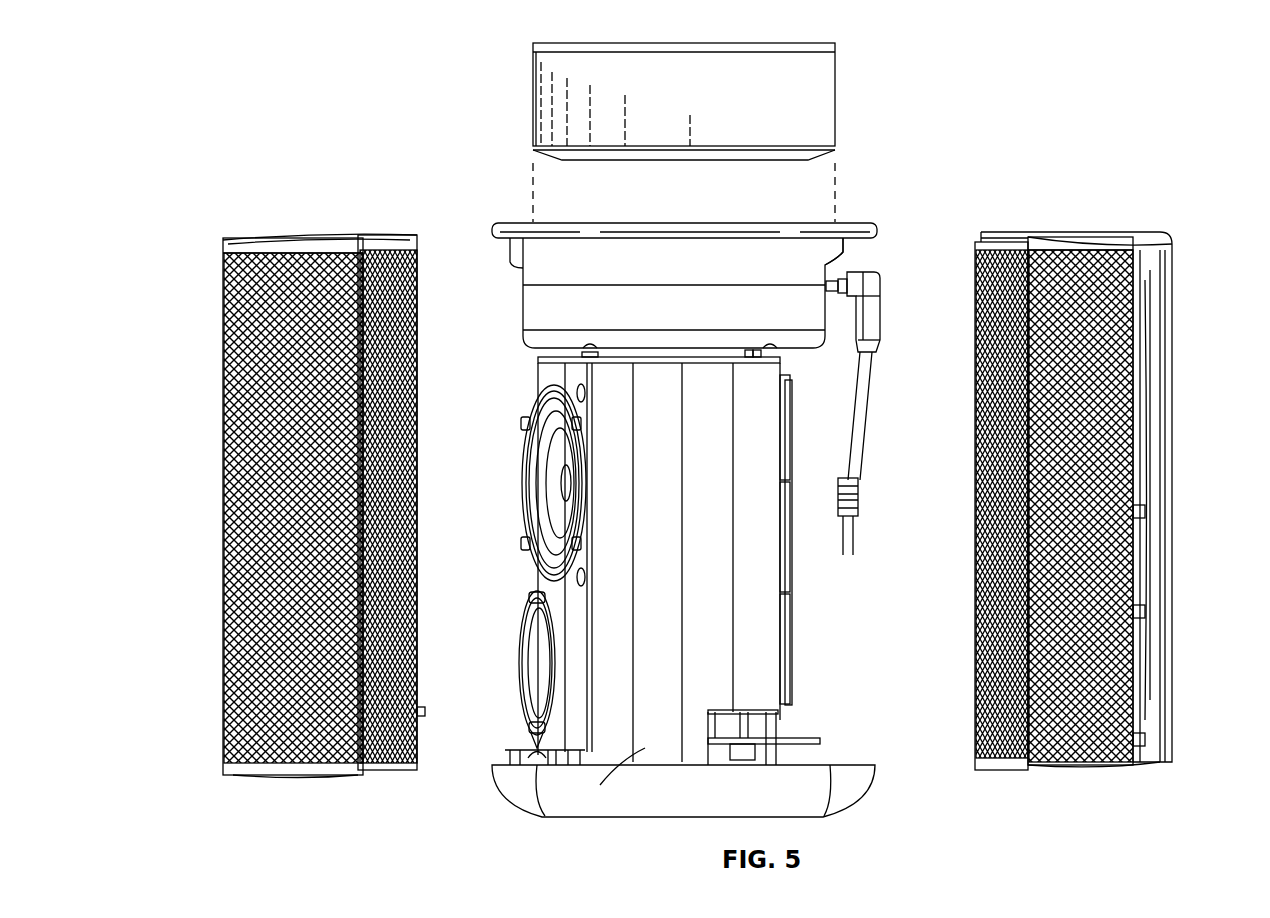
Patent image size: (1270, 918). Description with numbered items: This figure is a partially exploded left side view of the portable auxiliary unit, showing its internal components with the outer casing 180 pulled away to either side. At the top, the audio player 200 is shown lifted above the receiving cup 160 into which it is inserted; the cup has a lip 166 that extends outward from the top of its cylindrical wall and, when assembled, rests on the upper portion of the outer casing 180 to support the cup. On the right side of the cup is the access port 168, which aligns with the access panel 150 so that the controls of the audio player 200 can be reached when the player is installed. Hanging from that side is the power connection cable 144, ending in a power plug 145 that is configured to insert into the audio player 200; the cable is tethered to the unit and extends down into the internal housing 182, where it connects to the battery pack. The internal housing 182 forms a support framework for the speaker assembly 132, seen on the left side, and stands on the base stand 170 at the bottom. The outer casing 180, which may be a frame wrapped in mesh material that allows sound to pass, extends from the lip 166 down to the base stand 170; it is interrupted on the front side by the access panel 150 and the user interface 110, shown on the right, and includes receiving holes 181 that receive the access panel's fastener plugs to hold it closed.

The audio player 200 is at (795, 43).
The lip 166 is at (500, 225).
The access port 168 is at (838, 262).
The receiving cup 160 is at (712, 273).
The power plug 145 is at (828, 285).
The power connection cable 144 is at (855, 378).
The speaker assembly 132 is at (510, 380).
The internal housing 182 is at (655, 745).
The base stand 170 is at (862, 803).
The receiving holes 181 is at (238, 238).
The outer casing 180 is at (222, 305).
The user interface 110 is at (1160, 723).
The access panel 150 is at (1172, 280).